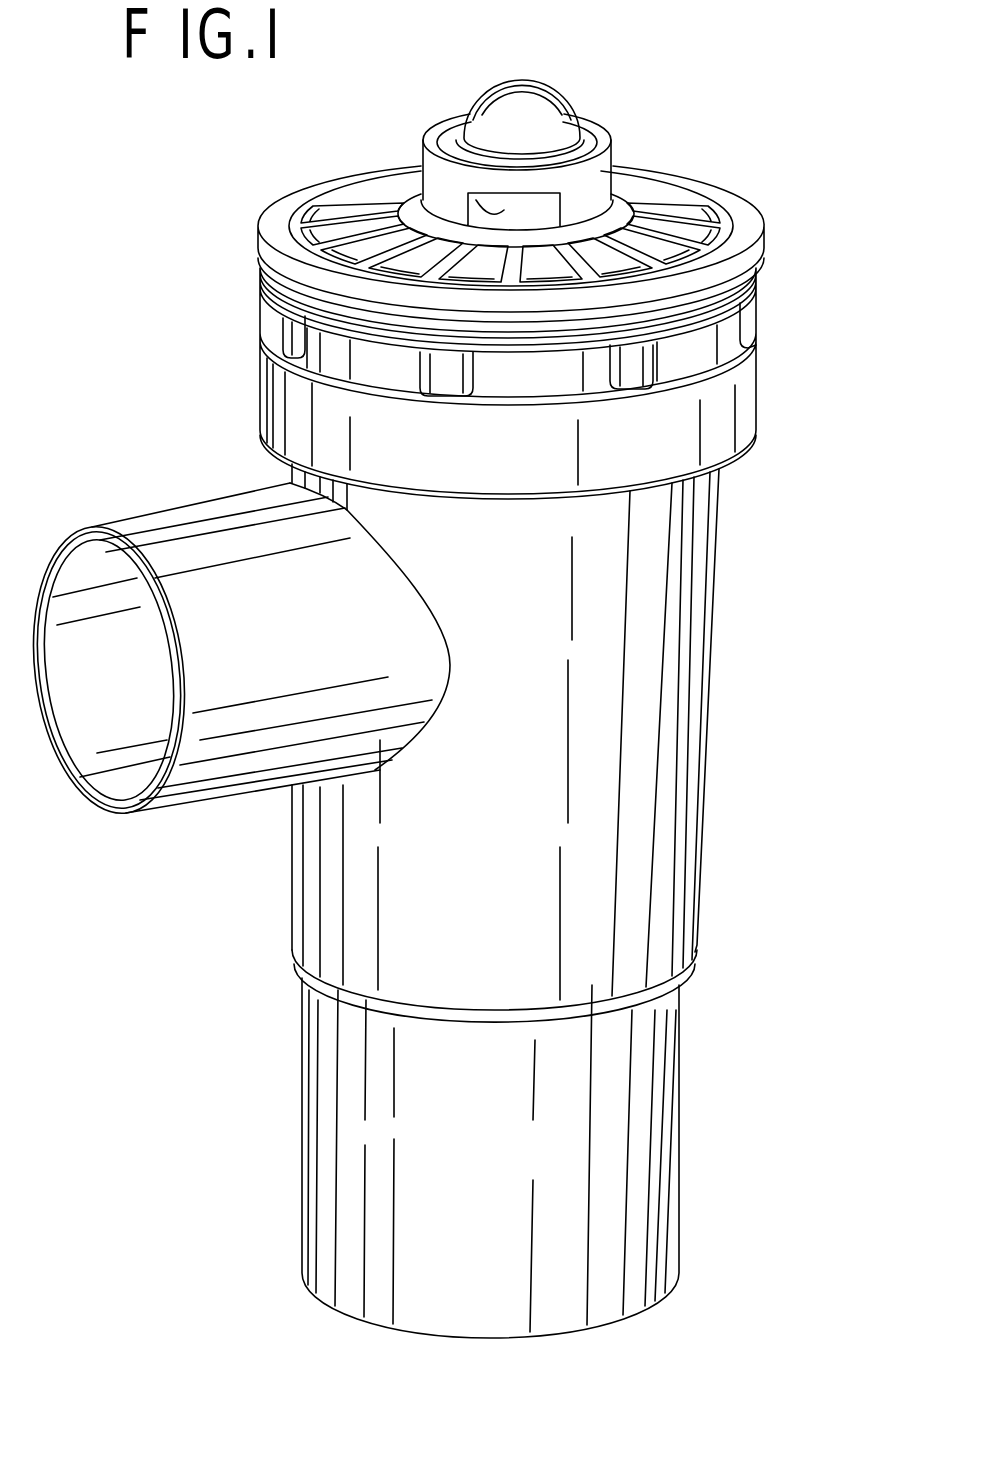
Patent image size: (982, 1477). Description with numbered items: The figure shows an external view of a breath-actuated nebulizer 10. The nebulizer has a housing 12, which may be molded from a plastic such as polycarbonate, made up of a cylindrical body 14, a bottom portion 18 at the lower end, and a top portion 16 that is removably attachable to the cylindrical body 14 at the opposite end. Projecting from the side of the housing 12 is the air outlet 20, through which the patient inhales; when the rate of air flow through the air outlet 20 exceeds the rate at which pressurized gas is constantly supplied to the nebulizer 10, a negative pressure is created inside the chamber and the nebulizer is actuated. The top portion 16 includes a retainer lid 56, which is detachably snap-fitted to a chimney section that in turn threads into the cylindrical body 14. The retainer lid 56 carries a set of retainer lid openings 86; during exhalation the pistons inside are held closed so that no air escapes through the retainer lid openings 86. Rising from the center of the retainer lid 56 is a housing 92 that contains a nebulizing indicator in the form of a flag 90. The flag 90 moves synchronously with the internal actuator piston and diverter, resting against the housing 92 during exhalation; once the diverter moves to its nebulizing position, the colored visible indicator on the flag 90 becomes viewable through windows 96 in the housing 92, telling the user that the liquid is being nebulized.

The nebulizer 10 is at (835, 567).
The housing 12 is at (714, 708).
The cylindrical body 14 is at (667, 783).
The top portion 16 is at (735, 222).
The bottom portion 18 is at (682, 1071).
The air outlet 20 is at (203, 545).
The retainer lid 56 is at (693, 267).
The retainer lid openings 86 is at (420, 288).
The flag 90 is at (484, 84).
The housing 92 is at (600, 130).
The windows 96 is at (470, 196).